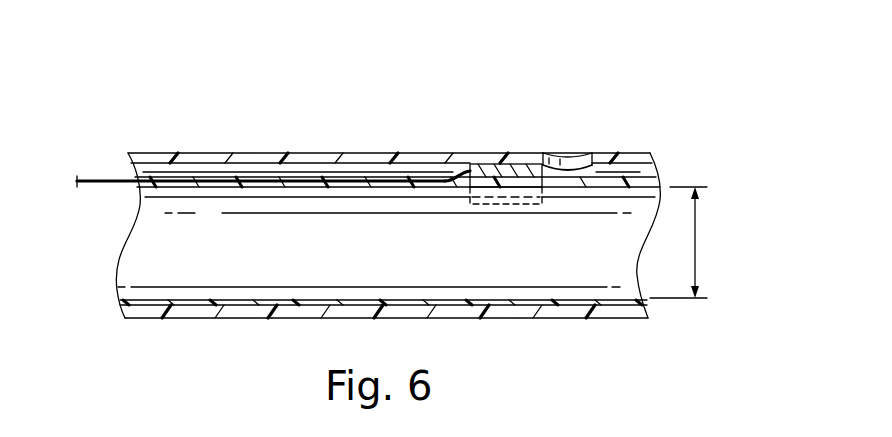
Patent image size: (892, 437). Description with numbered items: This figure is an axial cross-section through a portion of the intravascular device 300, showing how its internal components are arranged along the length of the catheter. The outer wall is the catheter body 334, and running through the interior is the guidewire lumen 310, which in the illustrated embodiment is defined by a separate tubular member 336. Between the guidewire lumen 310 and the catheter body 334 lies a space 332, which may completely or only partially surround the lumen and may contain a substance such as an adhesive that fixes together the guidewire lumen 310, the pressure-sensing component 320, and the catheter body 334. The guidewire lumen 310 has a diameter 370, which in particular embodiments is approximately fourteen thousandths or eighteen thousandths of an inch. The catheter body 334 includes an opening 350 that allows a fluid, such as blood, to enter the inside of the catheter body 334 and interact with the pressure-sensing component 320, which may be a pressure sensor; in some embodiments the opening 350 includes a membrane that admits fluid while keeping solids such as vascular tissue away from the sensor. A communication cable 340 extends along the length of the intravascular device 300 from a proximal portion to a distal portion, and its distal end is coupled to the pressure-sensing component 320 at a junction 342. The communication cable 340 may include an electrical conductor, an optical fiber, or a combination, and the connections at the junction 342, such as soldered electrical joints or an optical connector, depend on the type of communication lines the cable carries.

The intravascular device 300 is at (230, 77).
The guidewire lumen 310 is at (398, 263).
The pressure-sensing component 320 is at (517, 167).
The space 332 is at (350, 157).
The catheter body 334 is at (198, 157).
The tubular member 336 is at (220, 190).
The communication cable 340 is at (100, 177).
The junction 342 is at (462, 163).
The opening 350 is at (581, 137).
The diameter 370 is at (695, 243).